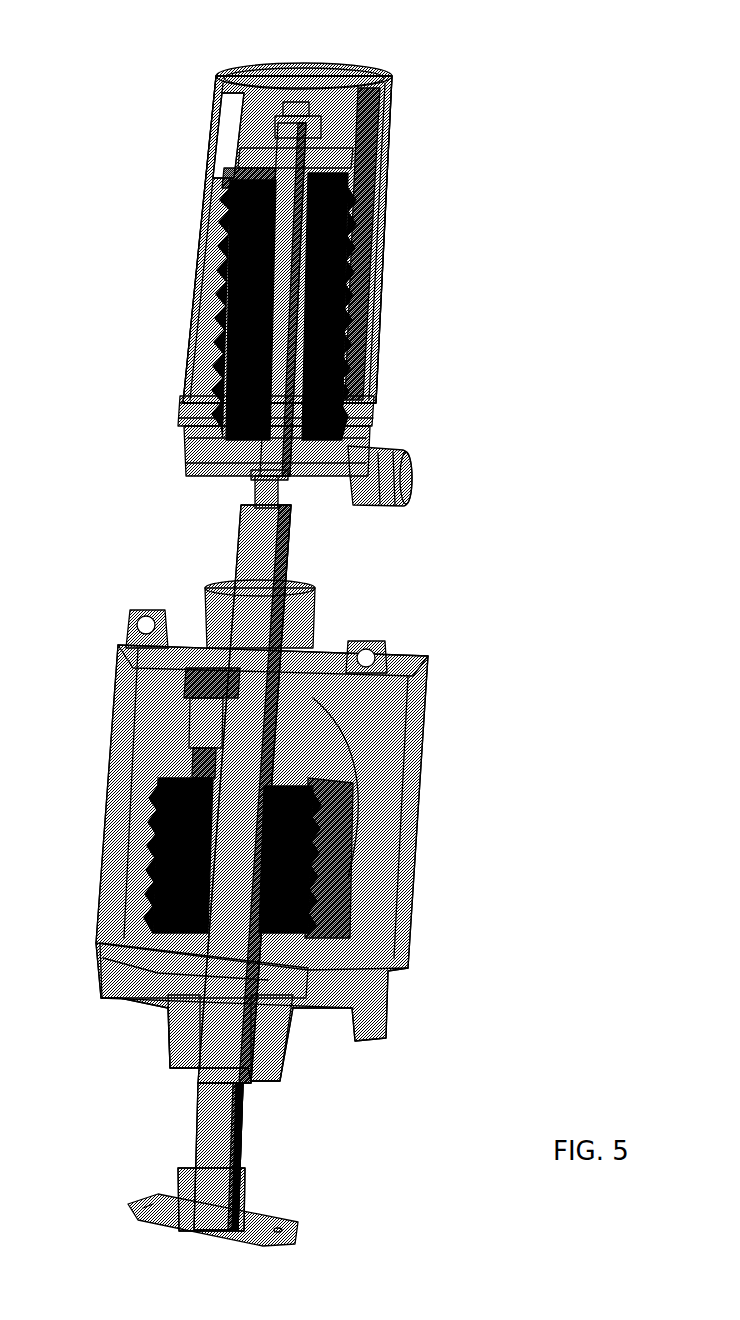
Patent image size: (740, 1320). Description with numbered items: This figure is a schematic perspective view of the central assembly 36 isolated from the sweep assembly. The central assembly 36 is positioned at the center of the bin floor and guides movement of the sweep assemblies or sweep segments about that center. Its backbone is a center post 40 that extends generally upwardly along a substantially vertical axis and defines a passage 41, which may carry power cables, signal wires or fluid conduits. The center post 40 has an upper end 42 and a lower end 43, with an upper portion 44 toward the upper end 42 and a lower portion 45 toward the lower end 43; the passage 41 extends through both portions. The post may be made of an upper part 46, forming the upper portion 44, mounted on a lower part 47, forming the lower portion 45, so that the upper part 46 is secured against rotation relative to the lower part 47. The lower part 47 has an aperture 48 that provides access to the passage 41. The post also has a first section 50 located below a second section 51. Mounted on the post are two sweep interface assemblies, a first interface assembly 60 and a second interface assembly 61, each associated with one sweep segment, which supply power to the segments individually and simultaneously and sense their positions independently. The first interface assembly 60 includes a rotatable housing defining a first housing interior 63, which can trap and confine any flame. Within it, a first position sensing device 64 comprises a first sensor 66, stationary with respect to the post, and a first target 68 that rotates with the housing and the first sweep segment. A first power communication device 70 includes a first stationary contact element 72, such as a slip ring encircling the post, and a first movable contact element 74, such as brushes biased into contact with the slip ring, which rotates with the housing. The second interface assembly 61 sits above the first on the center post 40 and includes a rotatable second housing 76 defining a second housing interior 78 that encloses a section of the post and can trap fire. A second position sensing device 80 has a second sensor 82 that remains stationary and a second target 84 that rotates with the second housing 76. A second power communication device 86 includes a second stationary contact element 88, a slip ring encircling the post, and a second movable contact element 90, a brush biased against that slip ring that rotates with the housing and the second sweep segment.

The central assembly 36 is at (425, 188).
The center post 40 is at (188, 1130).
The passage 41 is at (210, 1155).
The upper end 42 is at (288, 150).
The lower end 43 is at (182, 1173).
The upper portion 44 is at (253, 467).
The lower portion 45 is at (190, 1093).
The upper part 46 is at (250, 485).
The lower part 47 is at (188, 1107).
The aperture 48 is at (230, 937).
The first section 50 is at (233, 1112).
The second section 51 is at (281, 556).
The first interface assembly 60 is at (458, 645).
The second interface assembly 61 is at (484, 128).
The first housing interior 63 is at (353, 717).
The first position sensing device 64 is at (186, 676).
The first sensor 66 is at (182, 744).
The first target 68 is at (182, 698).
The first power communication device 70 is at (336, 781).
The first stationary contact element 72 is at (140, 845).
The first movable contact element 74 is at (325, 826).
The second housing 76 is at (372, 252).
The second housing interior 78 is at (345, 368).
The second position sensing device 80 is at (240, 108).
The second sensor 82 is at (318, 108).
The second target 84 is at (228, 163).
The second power communication device 86 is at (215, 298).
The second stationary contact element 88 is at (210, 290).
The second movable contact element 90 is at (335, 300).